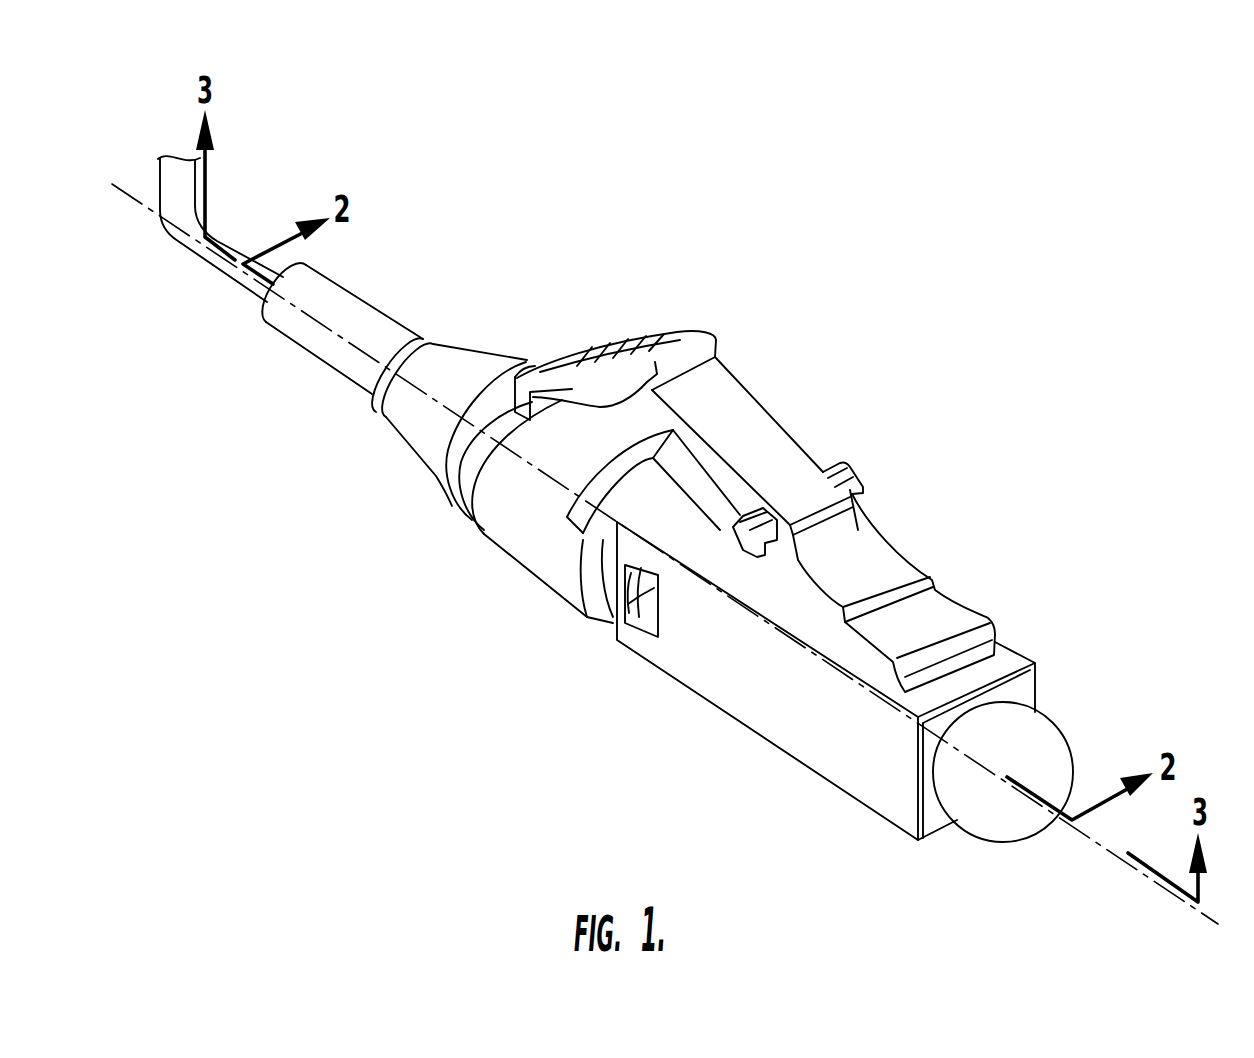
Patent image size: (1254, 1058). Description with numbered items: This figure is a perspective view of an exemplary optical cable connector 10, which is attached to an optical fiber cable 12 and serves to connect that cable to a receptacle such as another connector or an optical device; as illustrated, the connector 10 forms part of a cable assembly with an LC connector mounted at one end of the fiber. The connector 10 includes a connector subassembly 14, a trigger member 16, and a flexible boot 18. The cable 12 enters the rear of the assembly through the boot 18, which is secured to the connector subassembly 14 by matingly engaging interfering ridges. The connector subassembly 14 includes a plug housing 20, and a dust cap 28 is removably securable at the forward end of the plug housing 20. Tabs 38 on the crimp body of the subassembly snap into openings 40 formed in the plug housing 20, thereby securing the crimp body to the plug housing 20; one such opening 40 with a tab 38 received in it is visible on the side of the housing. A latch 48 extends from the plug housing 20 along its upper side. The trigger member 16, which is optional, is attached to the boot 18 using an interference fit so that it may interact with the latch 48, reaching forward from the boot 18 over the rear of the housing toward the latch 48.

The connector 10 is at (875, 232).
The optical fiber cable 12 is at (210, 254).
The connector subassembly 14 is at (648, 688).
The trigger member 16 is at (507, 558).
The flexible boot 18 is at (425, 433).
The plug housing 20 is at (801, 734).
The dust cap 28 is at (1003, 823).
The tabs 38 is at (653, 604).
The openings 40 is at (647, 621).
The latch 48 is at (763, 437).